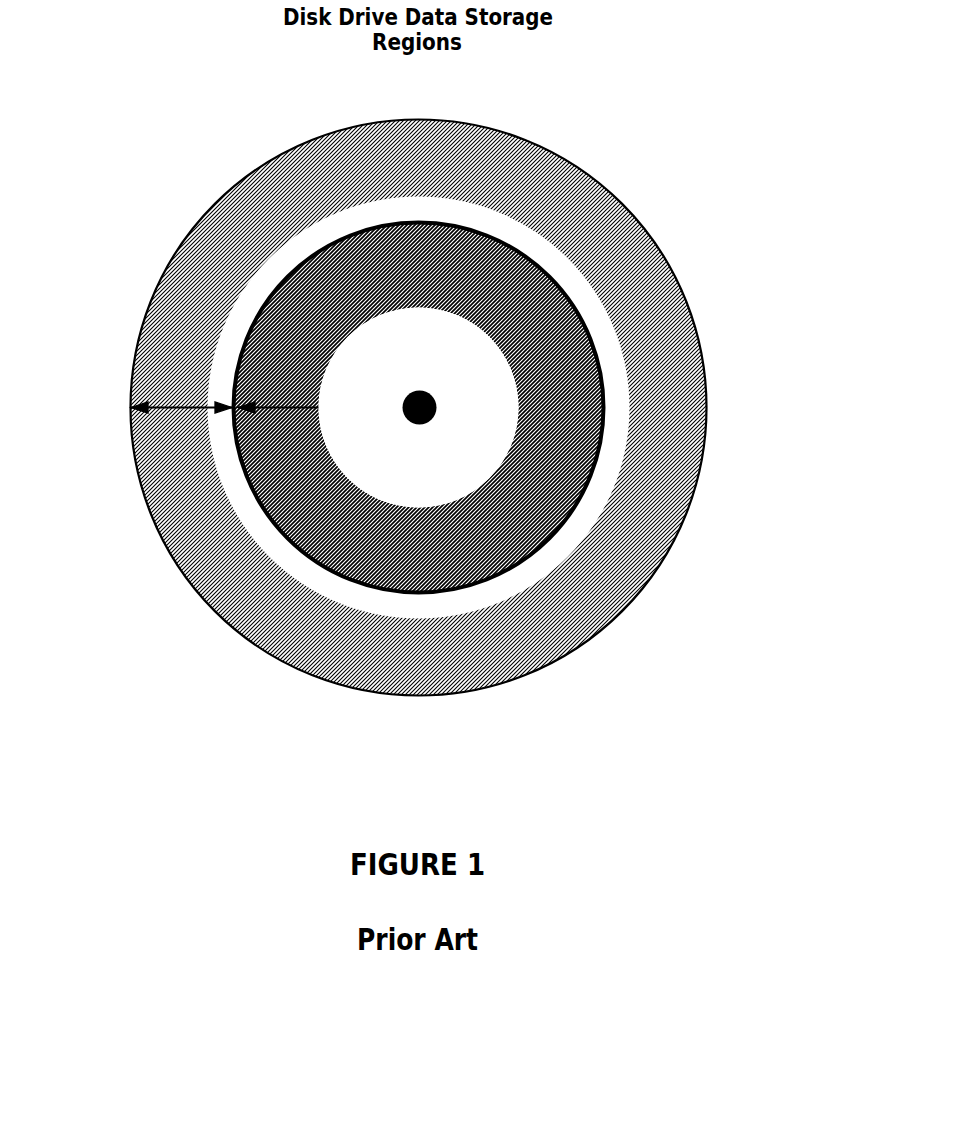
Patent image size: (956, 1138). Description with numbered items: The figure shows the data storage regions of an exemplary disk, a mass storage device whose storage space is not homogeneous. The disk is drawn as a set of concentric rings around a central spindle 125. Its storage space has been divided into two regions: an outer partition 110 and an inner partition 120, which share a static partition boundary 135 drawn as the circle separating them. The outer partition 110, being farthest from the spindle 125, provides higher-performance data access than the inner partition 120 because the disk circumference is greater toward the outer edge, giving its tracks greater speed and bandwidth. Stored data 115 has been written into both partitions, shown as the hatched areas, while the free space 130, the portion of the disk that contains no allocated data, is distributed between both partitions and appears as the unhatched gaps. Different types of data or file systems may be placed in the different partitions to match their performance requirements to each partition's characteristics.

The outer partition 110 is at (188, 398).
The stored data 115 is at (333, 310).
The inner partition 120 is at (300, 408).
The spindle 125 is at (437, 410).
The free space 130 is at (493, 373).
The static partition boundary 135 is at (604, 413).